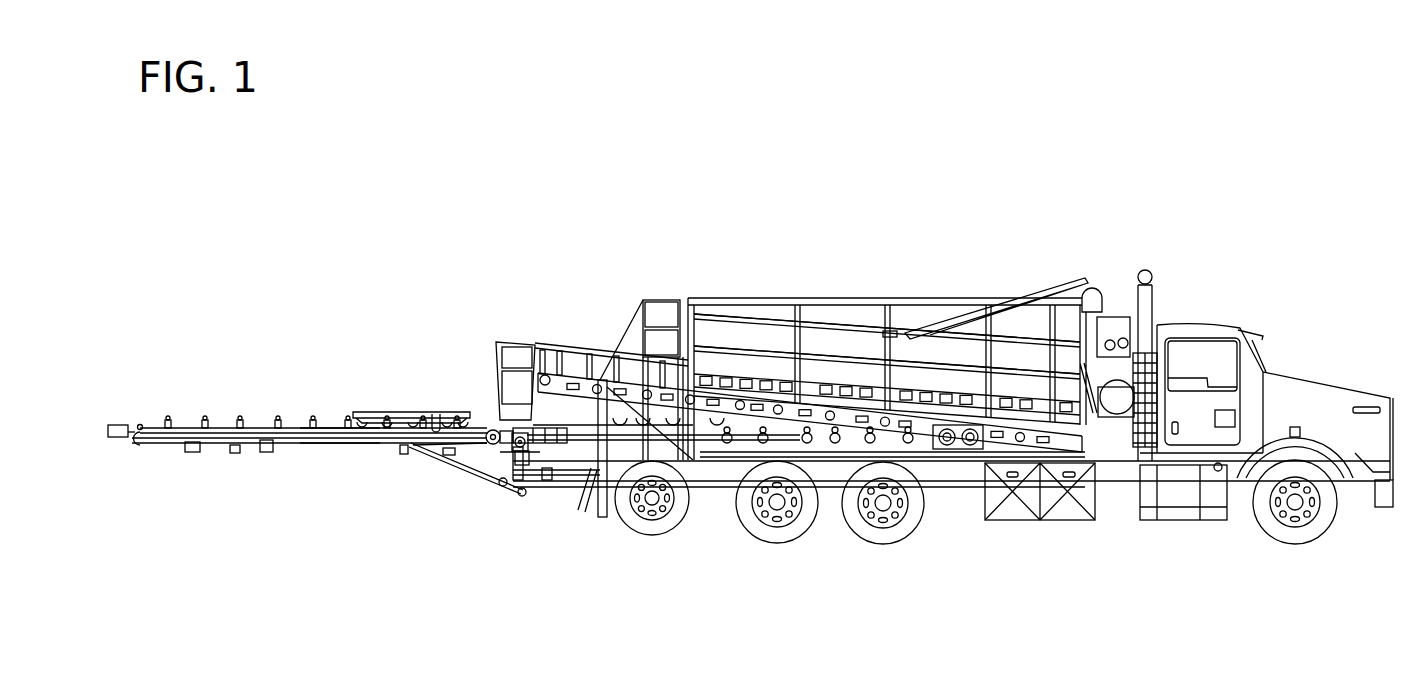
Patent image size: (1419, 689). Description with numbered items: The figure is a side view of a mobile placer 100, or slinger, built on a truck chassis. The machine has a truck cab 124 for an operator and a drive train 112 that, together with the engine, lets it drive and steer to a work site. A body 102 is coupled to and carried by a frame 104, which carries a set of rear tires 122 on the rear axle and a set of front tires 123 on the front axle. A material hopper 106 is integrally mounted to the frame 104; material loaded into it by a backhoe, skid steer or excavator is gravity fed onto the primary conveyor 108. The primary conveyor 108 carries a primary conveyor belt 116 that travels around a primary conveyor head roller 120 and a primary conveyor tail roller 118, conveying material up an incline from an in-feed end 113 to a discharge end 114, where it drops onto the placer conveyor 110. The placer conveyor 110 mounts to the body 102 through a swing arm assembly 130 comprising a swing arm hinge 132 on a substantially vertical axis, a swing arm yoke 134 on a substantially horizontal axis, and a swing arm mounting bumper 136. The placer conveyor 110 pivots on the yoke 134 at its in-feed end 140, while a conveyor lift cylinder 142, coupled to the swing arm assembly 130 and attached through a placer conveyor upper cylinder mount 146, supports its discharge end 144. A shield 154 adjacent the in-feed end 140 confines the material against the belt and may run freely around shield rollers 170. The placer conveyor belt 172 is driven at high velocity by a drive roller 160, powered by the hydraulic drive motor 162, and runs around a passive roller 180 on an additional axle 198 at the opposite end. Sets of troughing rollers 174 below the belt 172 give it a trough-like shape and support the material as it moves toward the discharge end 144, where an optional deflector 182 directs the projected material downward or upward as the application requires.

The mobile placer 100 is at (597, 170).
The body 102 is at (1003, 330).
The frame 104 is at (958, 487).
The material hopper 106 is at (857, 298).
The primary conveyor 108 is at (745, 380).
The placer conveyor 110 is at (290, 408).
The drive train 112 is at (727, 440).
The in-feed end 113 is at (1053, 413).
The discharge end 114 is at (570, 363).
The primary conveyor belt 116 is at (823, 332).
The primary conveyor tail roller 118 is at (1090, 440).
The primary conveyor head roller 120 is at (540, 380).
The rear tires 122 is at (867, 545).
The front tires 123 is at (1280, 545).
The truck cab 124 is at (1258, 305).
The swing arm assembly 130 is at (560, 493).
The swing arm hinge 132 is at (513, 490).
The swing arm yoke 134 is at (520, 455).
The swing arm mounting bumper 136 is at (607, 517).
The in-feed end 140 is at (487, 427).
The conveyor lift cylinder 142 is at (405, 453).
The discharge end 144 is at (190, 427).
The placer conveyor upper cylinder mount 146 is at (343, 424).
The shield 154 is at (383, 412).
The drive roller 160 is at (495, 430).
The drive motor 162 is at (482, 457).
The shield rollers 170 is at (337, 428).
The placer conveyor belt 172 is at (215, 443).
The troughing rollers 174 is at (243, 427).
The roller 180 is at (130, 443).
The deflector 182 is at (107, 432).
The additional axle 198 is at (140, 427).